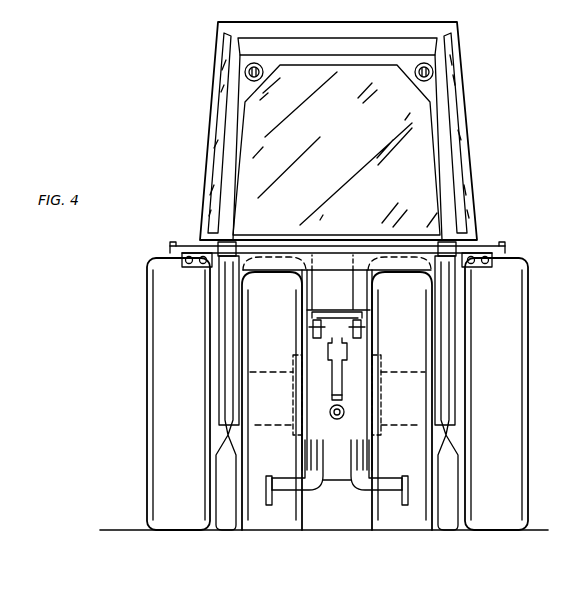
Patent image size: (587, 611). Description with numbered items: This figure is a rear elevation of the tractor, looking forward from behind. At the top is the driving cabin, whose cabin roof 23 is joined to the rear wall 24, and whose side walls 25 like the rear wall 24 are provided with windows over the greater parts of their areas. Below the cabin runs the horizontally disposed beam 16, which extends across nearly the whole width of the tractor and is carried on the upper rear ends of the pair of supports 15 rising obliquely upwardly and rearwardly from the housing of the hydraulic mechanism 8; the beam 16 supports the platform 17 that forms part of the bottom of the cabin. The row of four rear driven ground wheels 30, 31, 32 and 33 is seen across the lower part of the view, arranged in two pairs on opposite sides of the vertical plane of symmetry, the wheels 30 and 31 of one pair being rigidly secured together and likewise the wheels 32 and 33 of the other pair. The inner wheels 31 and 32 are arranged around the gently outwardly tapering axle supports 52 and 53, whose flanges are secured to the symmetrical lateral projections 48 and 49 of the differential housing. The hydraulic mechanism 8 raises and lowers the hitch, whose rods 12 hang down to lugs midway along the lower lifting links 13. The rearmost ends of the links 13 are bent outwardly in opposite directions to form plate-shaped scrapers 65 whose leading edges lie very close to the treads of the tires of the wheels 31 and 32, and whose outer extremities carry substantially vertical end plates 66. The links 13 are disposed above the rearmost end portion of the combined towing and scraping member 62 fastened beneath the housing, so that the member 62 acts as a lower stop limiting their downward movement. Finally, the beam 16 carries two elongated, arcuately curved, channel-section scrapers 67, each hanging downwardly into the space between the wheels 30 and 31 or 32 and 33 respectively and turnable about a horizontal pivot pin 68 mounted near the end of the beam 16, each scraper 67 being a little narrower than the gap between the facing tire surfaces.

The hydraulic mechanism 8 is at (352, 322).
The rods 12 is at (336, 434).
The lower lifting links 13 is at (305, 470).
The supports 15 is at (356, 286).
The beam 16 is at (193, 268).
The platform 17 is at (176, 246).
The cabin roof 23 is at (345, 22).
The rear wall 24 is at (453, 125).
The side walls 25 is at (216, 126).
The rear driven ground wheel 30 is at (150, 484).
The rear driven ground wheel 31 is at (246, 530).
The rear driven ground wheel 32 is at (386, 530).
The rear driven ground wheel 33 is at (488, 530).
The lateral projection 48 is at (292, 430).
The lateral projection 49 is at (381, 430).
The axle support 52 is at (254, 378).
The axle support 53 is at (410, 378).
The combined towing and scraping member 62 is at (330, 488).
The scrapers 65 is at (276, 496).
The end plates 66 is at (272, 494).
The scrapers 67 is at (225, 335).
The pivot pin 68 is at (236, 256).